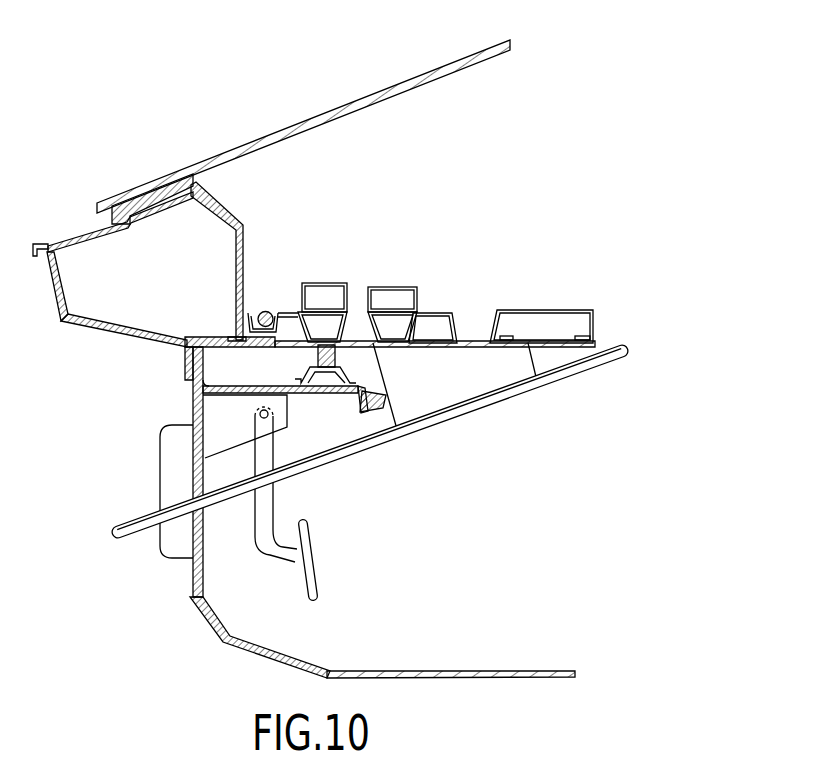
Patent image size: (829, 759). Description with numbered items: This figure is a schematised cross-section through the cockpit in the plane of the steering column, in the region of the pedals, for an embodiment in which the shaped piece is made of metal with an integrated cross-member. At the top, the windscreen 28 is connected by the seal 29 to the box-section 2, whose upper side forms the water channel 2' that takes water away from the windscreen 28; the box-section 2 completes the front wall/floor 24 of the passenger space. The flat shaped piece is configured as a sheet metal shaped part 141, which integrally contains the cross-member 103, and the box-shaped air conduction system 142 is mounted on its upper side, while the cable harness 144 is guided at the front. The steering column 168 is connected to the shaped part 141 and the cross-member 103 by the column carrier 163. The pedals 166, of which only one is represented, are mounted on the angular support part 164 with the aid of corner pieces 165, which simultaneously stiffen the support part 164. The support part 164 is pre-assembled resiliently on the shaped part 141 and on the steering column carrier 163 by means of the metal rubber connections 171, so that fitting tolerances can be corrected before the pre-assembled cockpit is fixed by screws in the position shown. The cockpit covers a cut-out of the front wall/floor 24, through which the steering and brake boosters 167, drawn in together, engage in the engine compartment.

The windscreen 28 is at (463, 58).
The seal 29 is at (167, 200).
The water channel 2' is at (42, 219).
The box-section 2 is at (145, 285).
The cable harness 144 is at (264, 310).
The box-shaped air conduction system 142 is at (393, 297).
The sheet metal shaped part 141 is at (433, 327).
The cross-member 103 is at (542, 322).
The metal rubber connections 171 is at (335, 355).
The angular support part 164 is at (317, 393).
The corner pieces 165 is at (230, 416).
The steering and brake boosters 167 is at (175, 467).
The pedals 166 is at (263, 503).
The column carrier 163 is at (483, 382).
The steering column 168 is at (578, 372).
The front wall/floor 24 is at (358, 670).